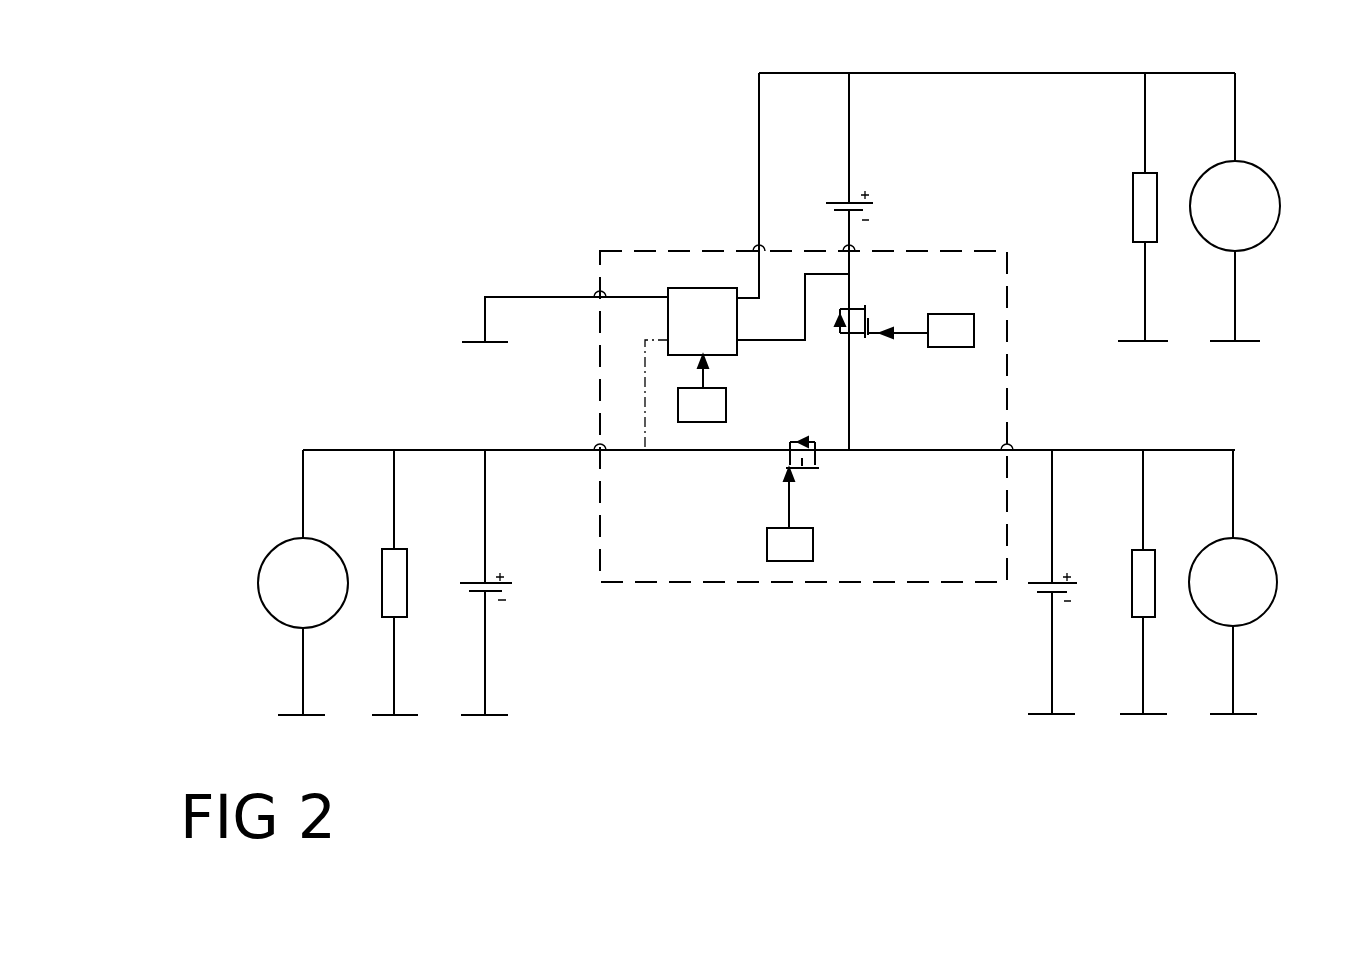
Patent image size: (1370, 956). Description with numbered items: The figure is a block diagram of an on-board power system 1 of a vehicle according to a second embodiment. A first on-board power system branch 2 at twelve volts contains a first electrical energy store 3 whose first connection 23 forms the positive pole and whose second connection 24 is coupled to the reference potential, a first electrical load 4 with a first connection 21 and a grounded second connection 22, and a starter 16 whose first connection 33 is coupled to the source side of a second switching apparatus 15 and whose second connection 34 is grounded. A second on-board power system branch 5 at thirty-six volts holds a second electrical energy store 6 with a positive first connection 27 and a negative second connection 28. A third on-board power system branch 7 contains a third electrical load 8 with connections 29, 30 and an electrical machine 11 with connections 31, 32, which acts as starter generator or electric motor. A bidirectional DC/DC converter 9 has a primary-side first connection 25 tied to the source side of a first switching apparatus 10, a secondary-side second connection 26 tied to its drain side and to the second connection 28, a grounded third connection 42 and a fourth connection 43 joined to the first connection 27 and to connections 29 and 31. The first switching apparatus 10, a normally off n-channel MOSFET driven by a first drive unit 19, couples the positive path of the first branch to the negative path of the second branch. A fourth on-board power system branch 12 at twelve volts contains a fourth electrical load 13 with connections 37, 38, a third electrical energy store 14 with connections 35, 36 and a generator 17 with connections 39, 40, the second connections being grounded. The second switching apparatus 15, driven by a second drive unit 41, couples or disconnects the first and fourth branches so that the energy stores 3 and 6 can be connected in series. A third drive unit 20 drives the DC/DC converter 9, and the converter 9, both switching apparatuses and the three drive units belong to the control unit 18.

The on-board power system 1 is at (378, 136).
The first on-board power system branch 2 is at (258, 416).
The first electrical energy store 3 is at (521, 590).
The first electrical load 4 is at (397, 585).
The second on-board power system branch 5 is at (898, 160).
The second electrical energy store 6 is at (879, 207).
The third on-board power system branch 7 is at (1257, 369).
The third electrical load 8 is at (1143, 205).
The DC/DC converter 9 is at (700, 318).
The first switching apparatus 10 is at (866, 347).
The electrical machine 11 is at (1265, 206).
The fourth on-board power system branch 12 is at (985, 690).
The fourth electrical load 13 is at (1143, 602).
The third electrical energy store 14 is at (1081, 592).
The second switching apparatus 15 is at (833, 462).
The starter 16 is at (280, 582).
The generator 17 is at (1262, 583).
The control unit 18 is at (930, 560).
The first drive unit 19 is at (945, 333).
The third drive unit 20 is at (726, 404).
The first connection of the first electrical load 21 is at (405, 535).
The second connection of the first electrical load 22 is at (380, 630).
The first connection of the first electrical energy store 23 is at (499, 560).
The second connection of the first electrical energy store 24 is at (475, 607).
The first connection of the DC/DC converter 25 is at (660, 336).
The second connection of the DC/DC converter 26 is at (748, 353).
The first connection of the second electrical energy store 27 is at (838, 186).
The second connection of the second electrical energy store 28 is at (860, 226).
The first connection of the third electrical load 29 is at (1125, 160).
The second connection of the third electrical load 30 is at (1130, 252).
The first connection of the electrical machine 31 is at (1254, 157).
The second connection of the electrical machine 32 is at (1251, 264).
The first connection of the starter 33 is at (278, 530).
The second connection of the starter 34 is at (292, 637).
The first connection of the third energy store 35 is at (1066, 560).
The second connection of the third energy store 36 is at (1061, 620).
The first connection of the fourth electrical load 37 is at (1163, 535).
The second connection of the fourth electrical load 38 is at (1151, 628).
The first connection of the generator 39 is at (1259, 520).
The second connection of the generator 40 is at (1251, 640).
The second drive unit 41 is at (767, 545).
The third connection of the DC/DC converter 42 is at (648, 285).
The fourth connection of the DC/DC converter 43 is at (745, 305).